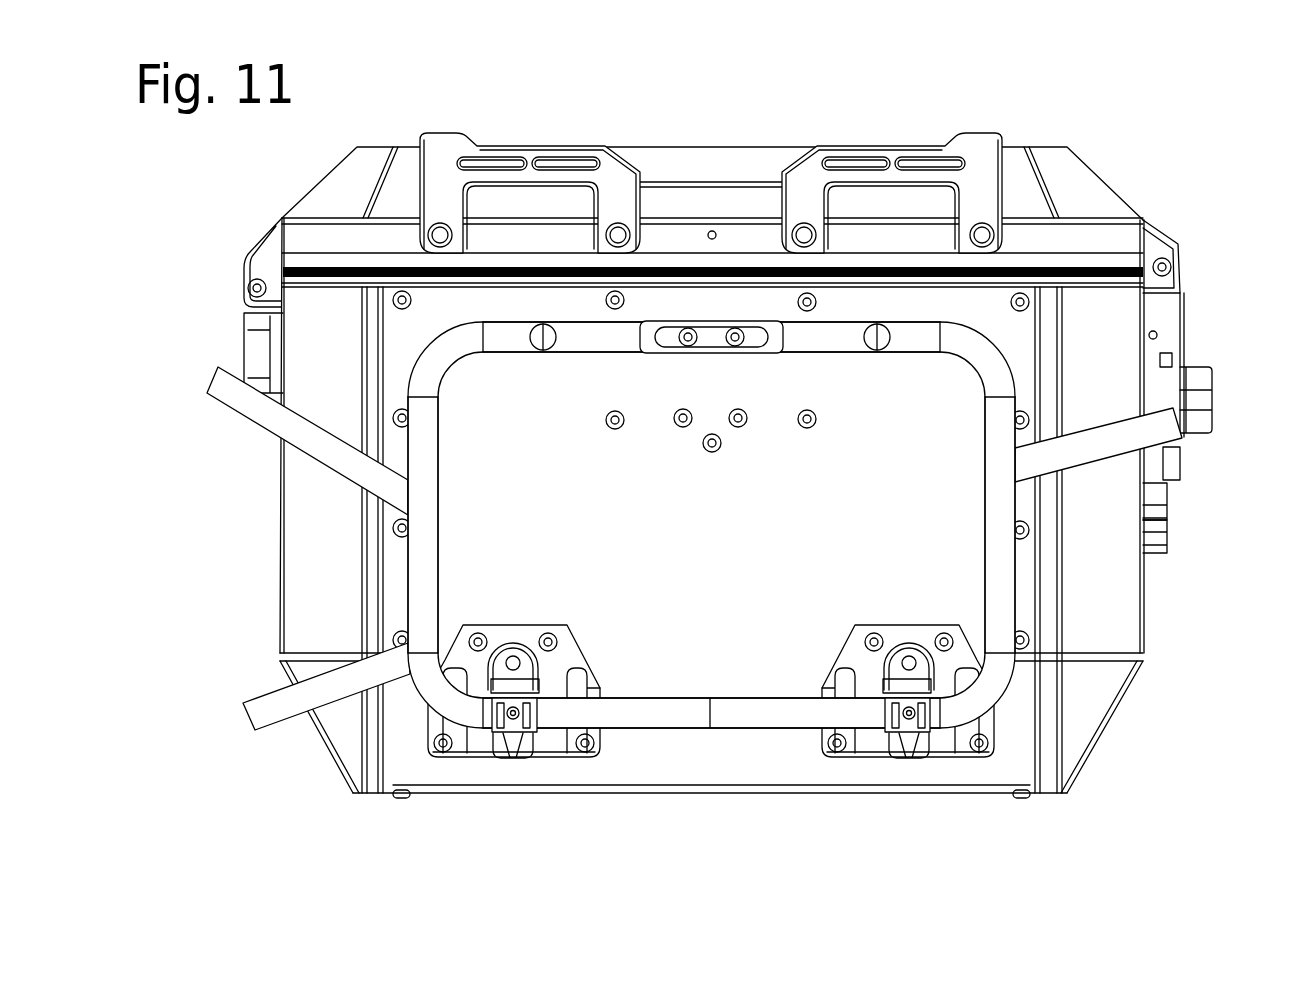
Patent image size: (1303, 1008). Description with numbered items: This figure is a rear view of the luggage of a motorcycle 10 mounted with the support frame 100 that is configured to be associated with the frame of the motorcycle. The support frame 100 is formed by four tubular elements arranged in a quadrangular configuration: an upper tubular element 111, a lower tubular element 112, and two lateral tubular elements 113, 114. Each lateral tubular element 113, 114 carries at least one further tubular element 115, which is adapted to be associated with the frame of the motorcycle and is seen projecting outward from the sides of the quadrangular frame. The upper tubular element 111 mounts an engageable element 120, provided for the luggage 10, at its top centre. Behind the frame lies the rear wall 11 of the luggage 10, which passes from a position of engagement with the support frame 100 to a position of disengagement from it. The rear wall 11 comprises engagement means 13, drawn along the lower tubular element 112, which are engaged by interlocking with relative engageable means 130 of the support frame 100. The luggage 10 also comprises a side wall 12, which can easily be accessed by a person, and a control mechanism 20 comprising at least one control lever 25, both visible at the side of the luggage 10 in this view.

The luggage of a motorcycle 10 is at (683, 177).
The rear wall 11 is at (937, 397).
The side wall 12 is at (1143, 617).
The engagement means 13 is at (520, 740).
The control mechanism 20 is at (1172, 545).
The control lever 25 is at (1153, 518).
The support frame 100 is at (706, 465).
The upper tubular element 111 is at (830, 337).
The lower tubular element 112 is at (790, 713).
The lateral tubular element 113 is at (425, 563).
The lateral tubular element 114 is at (1003, 580).
The further tubular element 115 is at (258, 400).
The engageable element 120 is at (710, 338).
The engageable means 130 is at (510, 713).